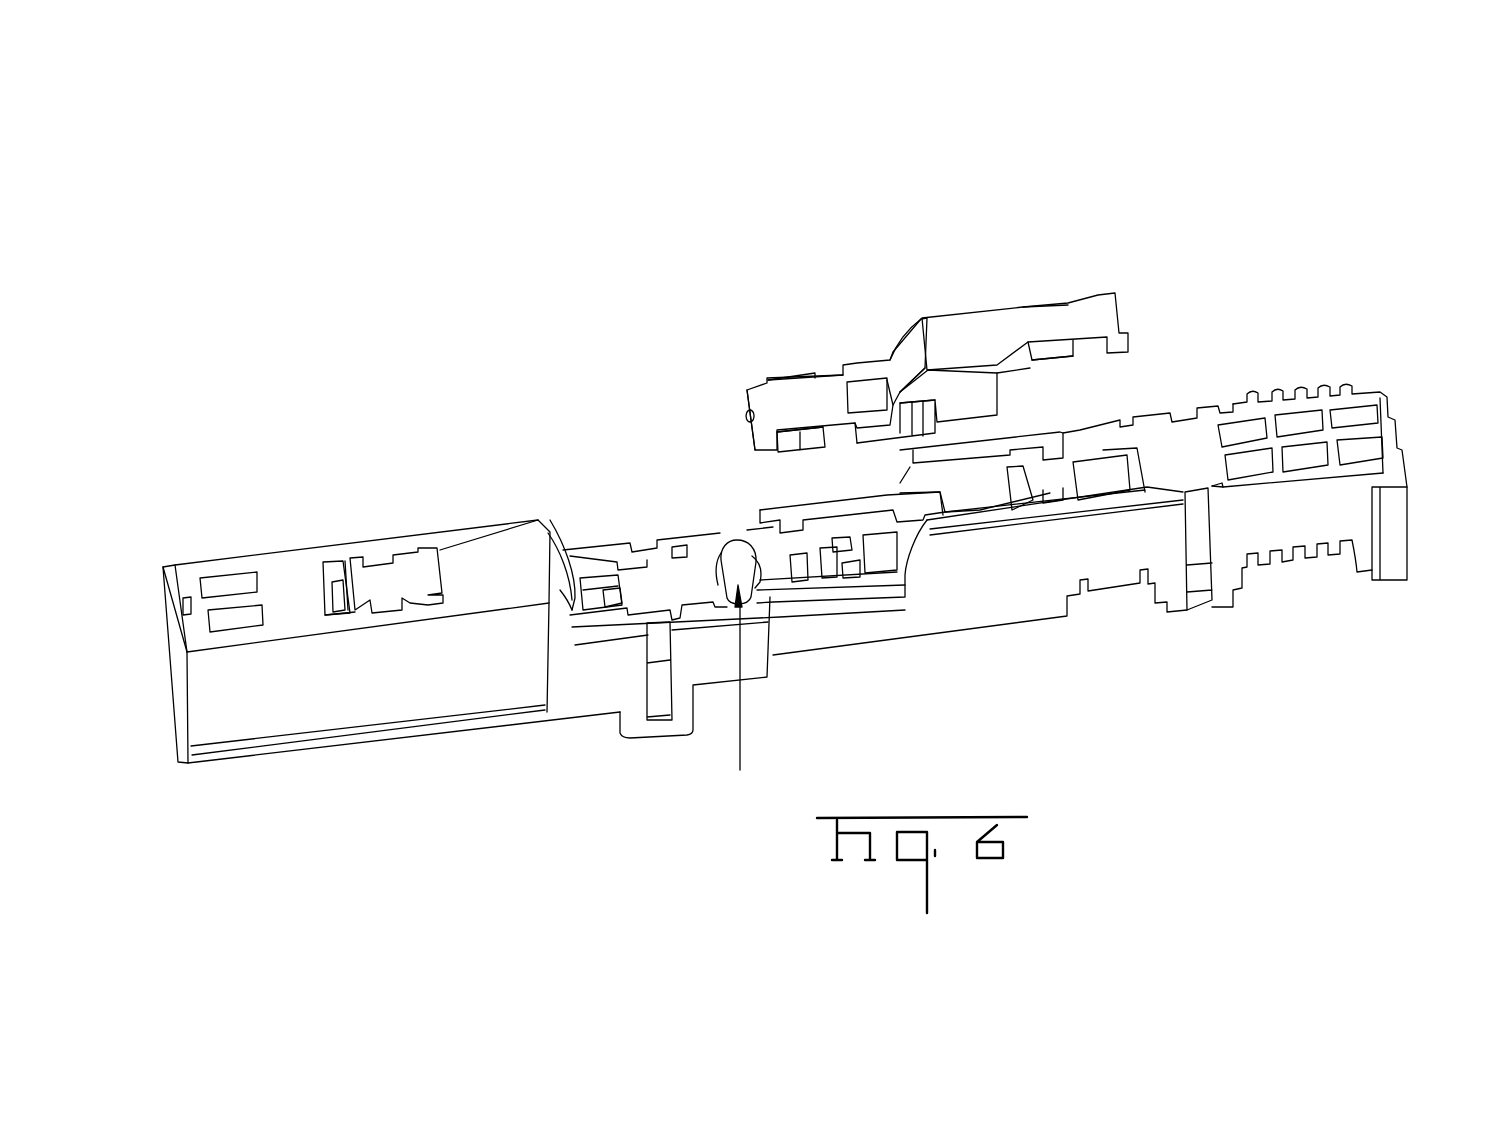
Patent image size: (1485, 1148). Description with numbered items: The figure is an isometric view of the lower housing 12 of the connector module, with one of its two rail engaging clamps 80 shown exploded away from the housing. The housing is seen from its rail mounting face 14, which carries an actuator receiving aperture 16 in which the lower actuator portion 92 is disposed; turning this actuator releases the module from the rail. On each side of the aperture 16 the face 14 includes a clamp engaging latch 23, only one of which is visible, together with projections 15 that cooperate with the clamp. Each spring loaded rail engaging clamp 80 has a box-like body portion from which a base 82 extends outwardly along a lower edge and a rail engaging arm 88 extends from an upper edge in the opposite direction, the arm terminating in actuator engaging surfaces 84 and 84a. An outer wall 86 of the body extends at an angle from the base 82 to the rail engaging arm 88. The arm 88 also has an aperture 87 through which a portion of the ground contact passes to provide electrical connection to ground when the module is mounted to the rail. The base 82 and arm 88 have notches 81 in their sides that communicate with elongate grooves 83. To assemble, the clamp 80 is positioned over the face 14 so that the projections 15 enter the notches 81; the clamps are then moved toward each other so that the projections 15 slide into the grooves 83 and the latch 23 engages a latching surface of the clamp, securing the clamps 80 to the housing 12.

The lower housing 12 is at (1403, 435).
The rail mounting face 14 is at (1220, 405).
The projections 15 is at (415, 600).
The actuator receiving aperture 16 is at (742, 540).
The clamp engaging latch 23 is at (810, 572).
The rail engaging clamp 80 is at (396, 564).
The notches 81 is at (842, 441).
The base 82 is at (992, 325).
The elongate grooves 83 is at (803, 440).
The actuator engaging surfaces 84 is at (748, 446).
The actuator engaging surface 84a is at (748, 418).
The outer wall 86 is at (907, 360).
The aperture 87 is at (864, 398).
The rail engaging arm 88 is at (787, 402).
The lower actuator portion 92 is at (742, 691).